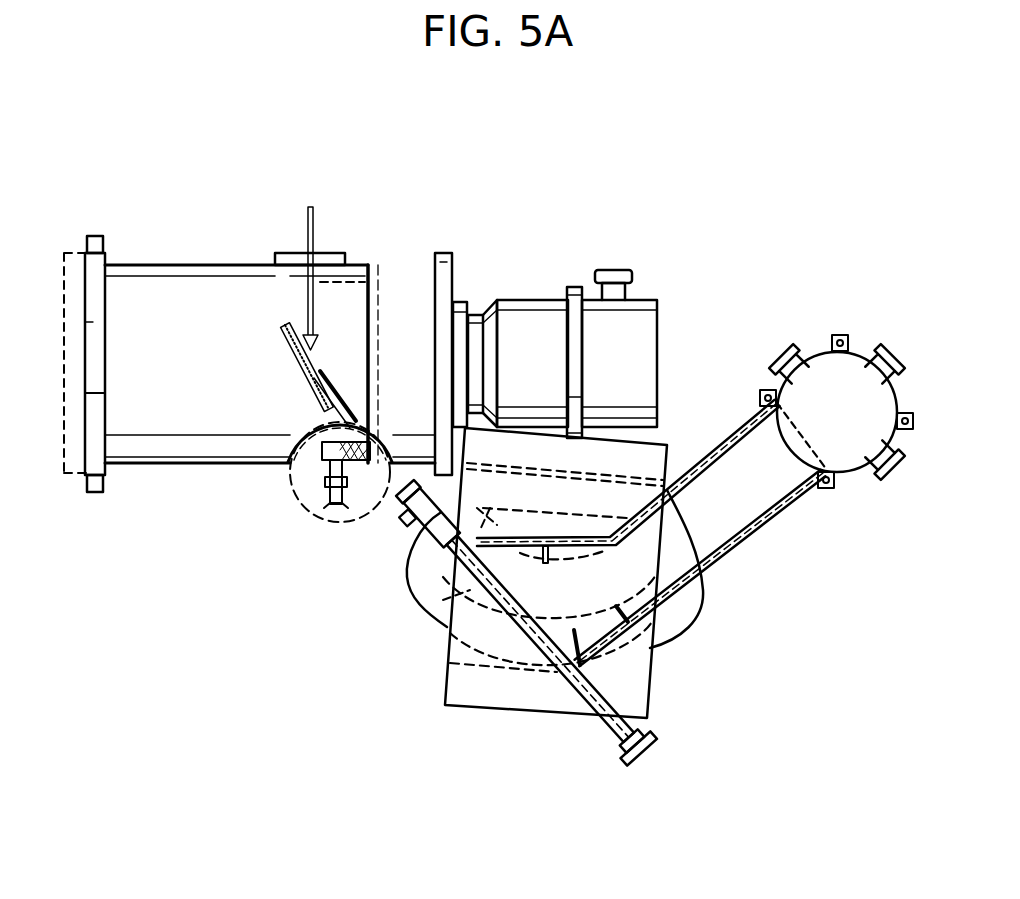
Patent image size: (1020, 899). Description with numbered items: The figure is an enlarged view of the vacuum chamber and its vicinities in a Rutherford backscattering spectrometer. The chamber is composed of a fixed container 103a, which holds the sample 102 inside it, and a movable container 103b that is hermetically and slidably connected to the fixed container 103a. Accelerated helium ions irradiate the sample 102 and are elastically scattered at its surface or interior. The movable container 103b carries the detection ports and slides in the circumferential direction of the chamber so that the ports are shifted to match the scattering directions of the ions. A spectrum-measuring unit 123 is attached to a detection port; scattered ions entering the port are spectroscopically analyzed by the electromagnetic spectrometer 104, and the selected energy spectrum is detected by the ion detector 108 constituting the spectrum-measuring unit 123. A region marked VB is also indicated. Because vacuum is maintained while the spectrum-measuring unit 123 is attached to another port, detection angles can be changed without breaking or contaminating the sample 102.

The sample 102 is at (282, 331).
The fixed container 103a is at (176, 264).
The movable container 103b is at (407, 265).
The electromagnetic spectrometer 104 is at (447, 628).
The ion detector 108 is at (827, 347).
The spectrum-measuring unit 123 is at (688, 668).
The valve VB is at (313, 512).